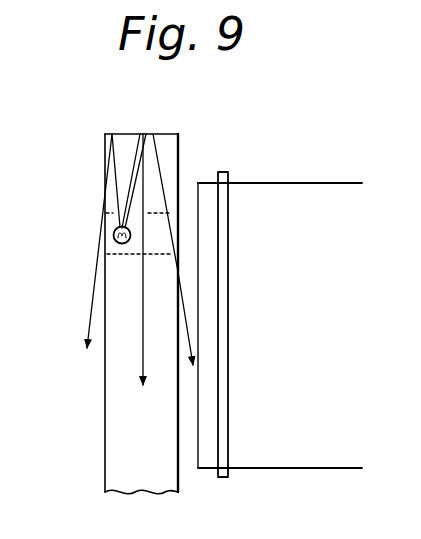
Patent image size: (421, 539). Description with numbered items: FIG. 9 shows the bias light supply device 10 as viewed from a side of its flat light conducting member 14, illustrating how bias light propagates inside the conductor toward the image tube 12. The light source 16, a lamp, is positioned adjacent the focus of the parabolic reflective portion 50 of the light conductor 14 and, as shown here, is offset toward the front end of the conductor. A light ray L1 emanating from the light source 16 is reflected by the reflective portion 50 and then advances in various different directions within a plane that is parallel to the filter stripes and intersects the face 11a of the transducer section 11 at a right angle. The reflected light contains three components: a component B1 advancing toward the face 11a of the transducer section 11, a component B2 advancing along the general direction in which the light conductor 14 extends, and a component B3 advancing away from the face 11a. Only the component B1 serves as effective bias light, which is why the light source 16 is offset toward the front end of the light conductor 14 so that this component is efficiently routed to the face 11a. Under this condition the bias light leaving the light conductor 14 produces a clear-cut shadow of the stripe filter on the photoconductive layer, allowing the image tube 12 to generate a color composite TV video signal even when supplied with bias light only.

The bias light supply device 10 is at (104, 132).
The reflective portion 50 is at (130, 134).
The light ray L1 is at (140, 142).
The light source 16 is at (121, 244).
The light component B3 is at (92, 323).
The light component B2 is at (142, 368).
The light component B1 is at (188, 326).
The light conducting member 14 is at (105, 468).
The transducer section 11 is at (236, 167).
The face 11a is at (193, 455).
The image tube 12 is at (338, 182).